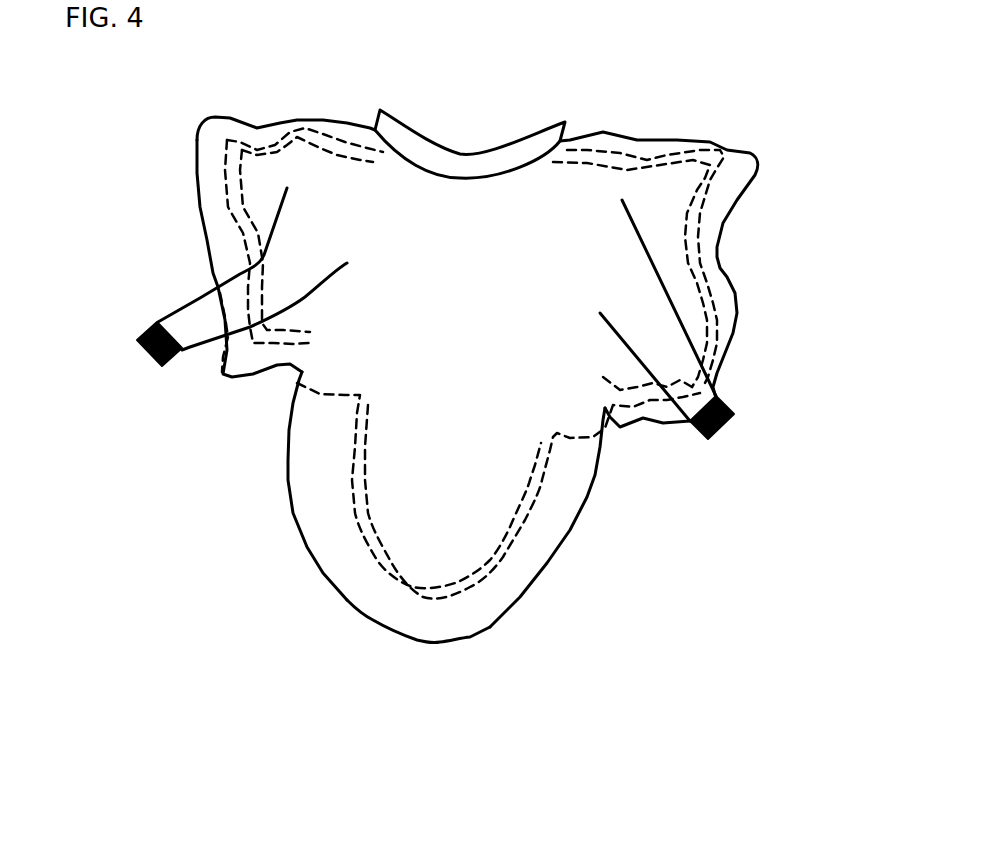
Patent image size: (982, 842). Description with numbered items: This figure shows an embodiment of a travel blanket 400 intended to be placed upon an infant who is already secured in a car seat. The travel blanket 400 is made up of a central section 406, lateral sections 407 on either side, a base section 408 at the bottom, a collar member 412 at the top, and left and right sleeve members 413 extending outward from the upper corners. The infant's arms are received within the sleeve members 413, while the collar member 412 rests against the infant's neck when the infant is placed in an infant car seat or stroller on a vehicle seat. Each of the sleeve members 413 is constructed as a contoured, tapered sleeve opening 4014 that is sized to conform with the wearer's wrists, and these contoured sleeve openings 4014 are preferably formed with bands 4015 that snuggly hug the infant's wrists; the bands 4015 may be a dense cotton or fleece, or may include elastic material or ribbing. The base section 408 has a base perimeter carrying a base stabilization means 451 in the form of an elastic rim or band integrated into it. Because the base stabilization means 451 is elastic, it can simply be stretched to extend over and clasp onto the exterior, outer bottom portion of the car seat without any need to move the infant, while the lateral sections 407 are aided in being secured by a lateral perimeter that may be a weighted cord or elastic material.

The travel blanket 400 is at (246, 91).
The collar member 412 is at (487, 160).
The lateral sections 407 is at (237, 215).
The left and right sleeve members 413 is at (197, 322).
The bands 4015 is at (137, 351).
The contoured sleeve openings 4014 is at (180, 355).
The central section 406 is at (490, 397).
The base stabilization means 451 is at (480, 573).
The base section 408 is at (412, 635).